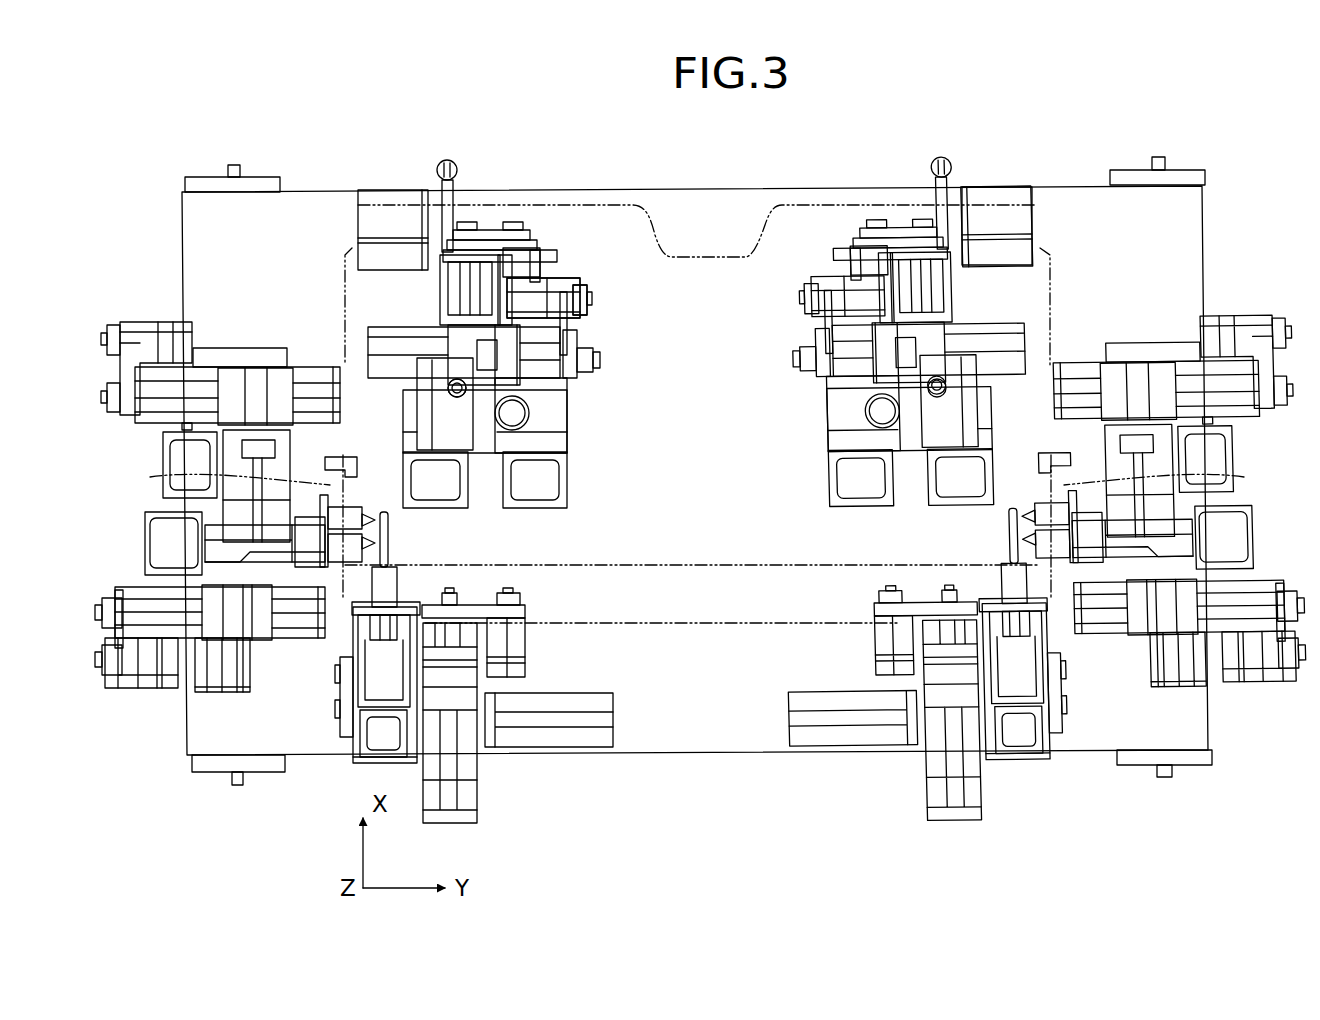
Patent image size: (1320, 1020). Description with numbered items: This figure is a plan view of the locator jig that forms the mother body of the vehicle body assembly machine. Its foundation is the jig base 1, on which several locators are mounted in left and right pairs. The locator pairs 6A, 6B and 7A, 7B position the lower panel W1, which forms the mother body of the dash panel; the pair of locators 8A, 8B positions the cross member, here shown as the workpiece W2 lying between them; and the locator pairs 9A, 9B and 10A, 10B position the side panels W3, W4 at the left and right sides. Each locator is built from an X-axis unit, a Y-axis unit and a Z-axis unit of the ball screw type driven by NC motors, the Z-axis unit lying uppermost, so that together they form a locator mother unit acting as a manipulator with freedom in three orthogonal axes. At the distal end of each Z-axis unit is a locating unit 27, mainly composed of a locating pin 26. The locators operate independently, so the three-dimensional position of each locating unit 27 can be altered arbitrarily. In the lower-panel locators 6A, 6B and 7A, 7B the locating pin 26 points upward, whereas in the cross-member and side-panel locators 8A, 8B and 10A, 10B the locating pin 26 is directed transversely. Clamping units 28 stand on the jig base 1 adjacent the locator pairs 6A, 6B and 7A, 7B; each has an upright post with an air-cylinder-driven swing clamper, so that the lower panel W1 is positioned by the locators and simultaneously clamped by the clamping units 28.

The jig base 1 is at (680, 756).
The locator 6A is at (432, 322).
The locator 6B is at (562, 280).
The locator 7A is at (828, 275).
The locator 7B is at (972, 315).
The locator 8A is at (365, 773).
The locator 8B is at (893, 758).
The locator 9A is at (190, 680).
The locator 9B is at (222, 345).
The locator 10A is at (1130, 640).
The locator 10B is at (1232, 312).
The locating pin 26 is at (515, 413).
The locating unit 27 is at (475, 389).
The clamping unit 28 is at (455, 160).
The lower panel W1 is at (637, 188).
The second workpiece W2 is at (680, 570).
The side panel W3 is at (337, 488).
The side panel W4 is at (1057, 488).